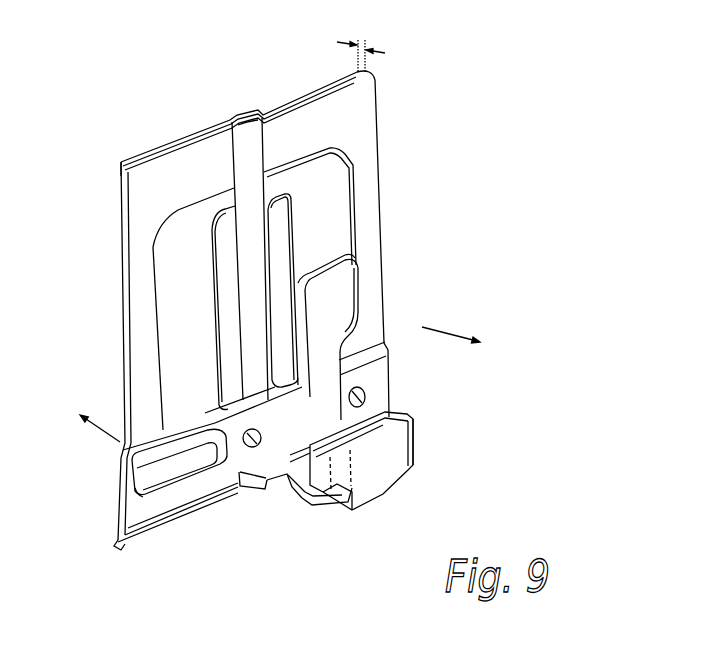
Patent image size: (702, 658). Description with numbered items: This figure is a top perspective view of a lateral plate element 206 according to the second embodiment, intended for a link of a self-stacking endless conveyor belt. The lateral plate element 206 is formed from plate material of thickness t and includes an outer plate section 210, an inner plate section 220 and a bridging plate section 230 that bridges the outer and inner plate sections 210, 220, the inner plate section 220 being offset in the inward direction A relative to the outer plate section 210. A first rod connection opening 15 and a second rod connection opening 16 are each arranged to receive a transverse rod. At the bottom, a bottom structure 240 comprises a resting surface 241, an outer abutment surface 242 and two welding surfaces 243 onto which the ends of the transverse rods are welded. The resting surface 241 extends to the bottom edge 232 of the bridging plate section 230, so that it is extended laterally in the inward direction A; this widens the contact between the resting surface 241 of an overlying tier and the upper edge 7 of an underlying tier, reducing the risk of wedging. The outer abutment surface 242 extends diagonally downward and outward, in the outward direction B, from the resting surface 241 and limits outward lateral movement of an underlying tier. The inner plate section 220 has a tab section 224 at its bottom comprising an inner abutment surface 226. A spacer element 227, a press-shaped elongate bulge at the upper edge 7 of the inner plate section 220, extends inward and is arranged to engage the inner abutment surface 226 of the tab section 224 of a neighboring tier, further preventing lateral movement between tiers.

The upper edge 7 is at (318, 90).
The first rod connection opening 15 is at (366, 403).
The second rod connection opening 16 is at (228, 483).
The lateral plate element 206 is at (452, 95).
The outer plate section 210 is at (350, 90).
The inner plate section 220 is at (162, 182).
The tab section 224 is at (160, 528).
The inner abutment surface 226 is at (232, 492).
The spacer element 227 is at (118, 172).
The bridging plate section 230 is at (247, 132).
The bottom edge 232 is at (240, 485).
The bottom structure 240 is at (382, 467).
The resting surface 241 is at (285, 494).
The outer abutment surface 242 is at (292, 490).
The welding surface 243 is at (418, 440).